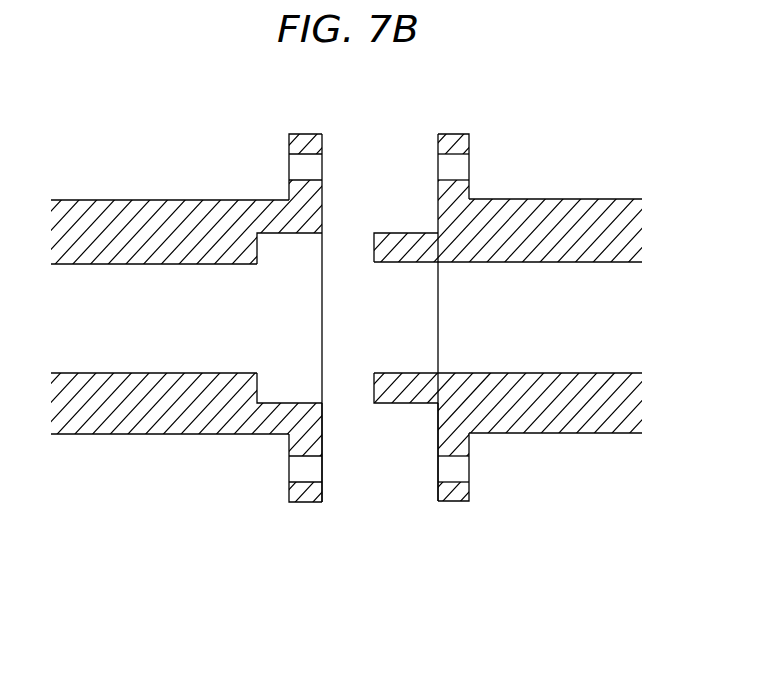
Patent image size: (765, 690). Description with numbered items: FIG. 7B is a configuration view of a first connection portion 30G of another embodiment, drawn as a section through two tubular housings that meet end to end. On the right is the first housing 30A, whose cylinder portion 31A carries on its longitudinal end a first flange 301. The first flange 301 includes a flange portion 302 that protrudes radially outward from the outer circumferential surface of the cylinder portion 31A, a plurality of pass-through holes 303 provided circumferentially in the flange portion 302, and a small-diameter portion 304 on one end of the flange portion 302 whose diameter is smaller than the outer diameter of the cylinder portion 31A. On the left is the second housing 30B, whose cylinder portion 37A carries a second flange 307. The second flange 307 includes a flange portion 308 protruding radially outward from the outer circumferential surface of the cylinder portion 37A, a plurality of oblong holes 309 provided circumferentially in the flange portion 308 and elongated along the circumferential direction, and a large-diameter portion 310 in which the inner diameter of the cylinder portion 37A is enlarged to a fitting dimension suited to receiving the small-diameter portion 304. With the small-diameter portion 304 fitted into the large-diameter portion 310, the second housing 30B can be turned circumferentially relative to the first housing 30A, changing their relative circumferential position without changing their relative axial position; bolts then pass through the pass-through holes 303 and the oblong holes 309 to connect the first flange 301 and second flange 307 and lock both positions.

The second housing 30B is at (382, 345).
The first housing 30A is at (382, 345).
The cylinder portion 37A is at (82, 200).
The cylinder portion 31A is at (619, 199).
The large-diameter portion 310 is at (290, 402).
The oblong holes 309 is at (303, 481).
The flange portion 308 is at (251, 347).
The second flange 307 is at (312, 528).
The small-diameter portion 304 is at (402, 404).
The pass-through holes 303 is at (470, 468).
The flange portion 302 is at (506, 347).
The first flange 301 is at (433, 528).
The first connection portion 30G is at (445, 610).